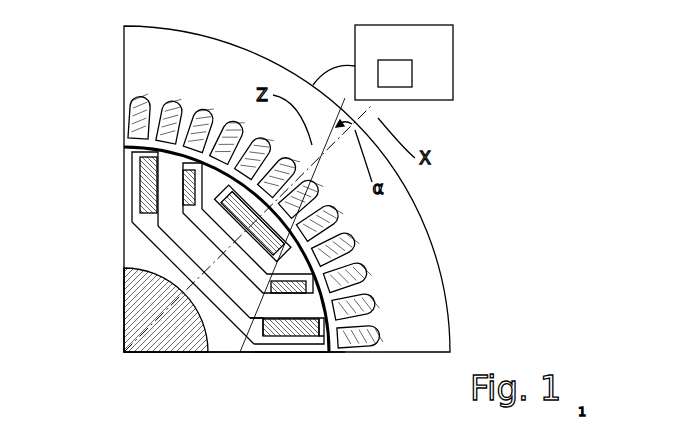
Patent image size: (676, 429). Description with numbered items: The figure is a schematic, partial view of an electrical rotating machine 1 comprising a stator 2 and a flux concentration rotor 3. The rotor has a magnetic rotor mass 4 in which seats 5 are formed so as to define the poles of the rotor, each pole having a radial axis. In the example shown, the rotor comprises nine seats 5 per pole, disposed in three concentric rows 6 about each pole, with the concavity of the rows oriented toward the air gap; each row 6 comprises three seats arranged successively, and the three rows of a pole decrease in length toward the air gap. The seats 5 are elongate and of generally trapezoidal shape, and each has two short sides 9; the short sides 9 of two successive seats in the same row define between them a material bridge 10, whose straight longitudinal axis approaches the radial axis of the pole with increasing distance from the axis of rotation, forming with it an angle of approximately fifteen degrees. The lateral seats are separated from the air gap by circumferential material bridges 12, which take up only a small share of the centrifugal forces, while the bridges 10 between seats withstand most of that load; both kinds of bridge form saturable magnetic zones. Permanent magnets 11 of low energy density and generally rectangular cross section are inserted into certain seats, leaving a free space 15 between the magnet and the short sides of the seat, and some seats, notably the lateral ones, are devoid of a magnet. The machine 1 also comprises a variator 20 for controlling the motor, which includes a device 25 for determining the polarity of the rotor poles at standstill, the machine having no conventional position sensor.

The electrical rotating machine 1 is at (499, 63).
The stator 2 is at (140, 70).
The flux concentration rotor 3 is at (220, 343).
The magnetic rotor mass 4 is at (292, 346).
The seats 5 is at (143, 217).
The rows 6 is at (132, 128).
The short sides 9 is at (242, 338).
The material bridge 10 is at (147, 227).
The permanent magnets 11 is at (124, 292).
The circumferential material bridges 12 is at (350, 267).
The free space 15 is at (150, 250).
The variator 20 is at (413, 55).
The device for determining polarity 25 is at (398, 80).